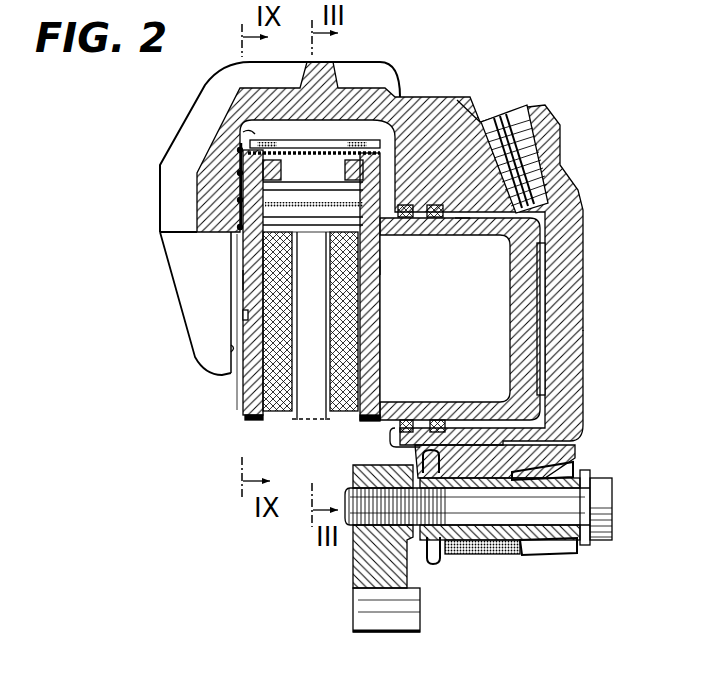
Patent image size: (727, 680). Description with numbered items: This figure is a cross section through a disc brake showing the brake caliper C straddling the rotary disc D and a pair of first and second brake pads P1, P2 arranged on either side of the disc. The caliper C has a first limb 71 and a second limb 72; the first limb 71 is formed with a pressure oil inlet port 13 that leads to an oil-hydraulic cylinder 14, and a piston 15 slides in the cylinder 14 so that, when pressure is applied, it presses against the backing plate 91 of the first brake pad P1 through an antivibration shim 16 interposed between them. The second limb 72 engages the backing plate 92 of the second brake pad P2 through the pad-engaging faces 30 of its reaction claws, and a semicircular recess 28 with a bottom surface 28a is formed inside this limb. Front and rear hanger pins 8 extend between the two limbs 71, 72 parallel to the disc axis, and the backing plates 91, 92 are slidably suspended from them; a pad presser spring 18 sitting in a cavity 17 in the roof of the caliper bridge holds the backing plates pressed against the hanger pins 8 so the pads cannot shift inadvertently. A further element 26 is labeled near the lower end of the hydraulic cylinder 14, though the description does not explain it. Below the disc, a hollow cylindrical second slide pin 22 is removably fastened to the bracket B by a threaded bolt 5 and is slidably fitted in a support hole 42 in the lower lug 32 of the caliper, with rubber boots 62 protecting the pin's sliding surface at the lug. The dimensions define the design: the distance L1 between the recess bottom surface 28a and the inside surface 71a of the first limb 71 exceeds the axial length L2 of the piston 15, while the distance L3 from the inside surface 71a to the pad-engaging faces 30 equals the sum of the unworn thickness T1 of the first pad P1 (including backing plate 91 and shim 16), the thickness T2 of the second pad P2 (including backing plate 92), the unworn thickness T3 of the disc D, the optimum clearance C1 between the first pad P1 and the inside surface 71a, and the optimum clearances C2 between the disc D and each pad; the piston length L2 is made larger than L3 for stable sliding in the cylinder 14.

The brake caliper C is at (440, 95).
The bracket B is at (356, 565).
The rotary disc D is at (312, 326).
The first brake pad P1 is at (362, 305).
The second brake pad P2 is at (241, 402).
The threaded bolt 5 is at (607, 493).
The hanger pins 8 is at (270, 193).
The pressure oil inlet port 13 is at (514, 113).
The oil-hydraulic cylinder 14 is at (546, 257).
The piston 15 is at (462, 230).
The antivibration shim 16 is at (379, 265).
The cavity 17 is at (248, 131).
The pad presser spring 18 is at (252, 147).
The seal 26 is at (442, 423).
The semicircular recess 28 is at (230, 373).
The bottom surface of recess 28a is at (235, 352).
The pad-engaging faces 30 is at (246, 315).
The first limb 71 is at (573, 323).
The inside surface of first limb 71a is at (400, 220).
The second limb 72 is at (184, 290).
The backing plate of first brake pad 91 is at (365, 338).
The backing plate of second brake pad 92 is at (247, 280).
The second slide pin 22 is at (467, 543).
The lower lug 32 is at (485, 557).
The support hole 42 is at (500, 540).
The rubber boot 62 is at (556, 551).
The distance between recess bottom and first limb inside surface L1 is at (312, 145).
The axial length of piston L2 is at (461, 323).
The distance between first limb inside surface and pad-engaging faces L3 is at (319, 108).
The thickness of first brake pad T1 is at (354, 440).
The thickness of second brake pad T2 is at (268, 440).
The thickness of rotary disc T3 is at (311, 440).
The optimum clearance between first pad and first limb inside surface C1 is at (387, 453).
The optimum clearances between disc and pads C2 is at (314, 459).